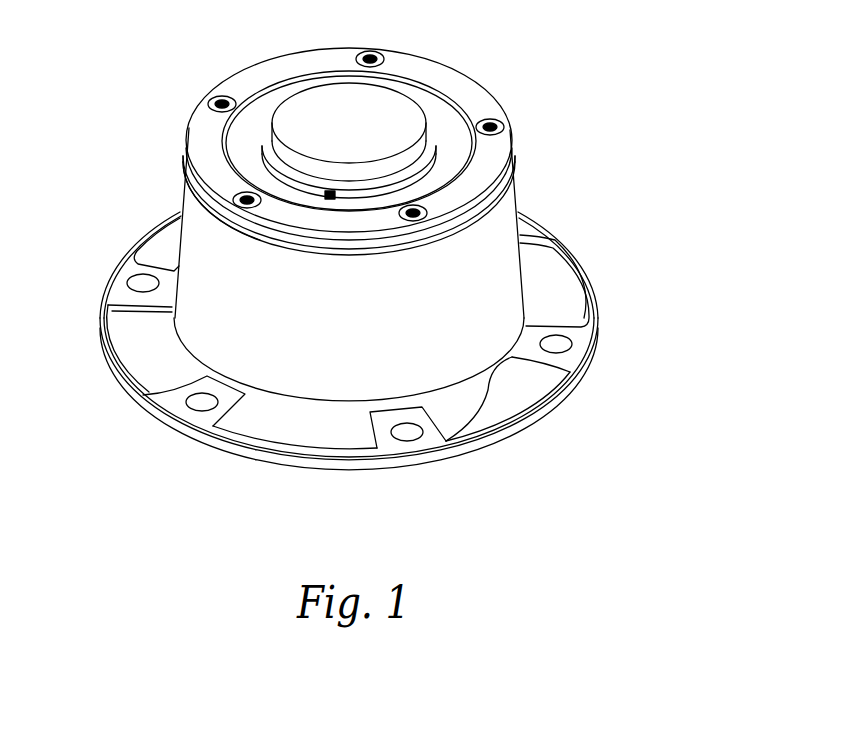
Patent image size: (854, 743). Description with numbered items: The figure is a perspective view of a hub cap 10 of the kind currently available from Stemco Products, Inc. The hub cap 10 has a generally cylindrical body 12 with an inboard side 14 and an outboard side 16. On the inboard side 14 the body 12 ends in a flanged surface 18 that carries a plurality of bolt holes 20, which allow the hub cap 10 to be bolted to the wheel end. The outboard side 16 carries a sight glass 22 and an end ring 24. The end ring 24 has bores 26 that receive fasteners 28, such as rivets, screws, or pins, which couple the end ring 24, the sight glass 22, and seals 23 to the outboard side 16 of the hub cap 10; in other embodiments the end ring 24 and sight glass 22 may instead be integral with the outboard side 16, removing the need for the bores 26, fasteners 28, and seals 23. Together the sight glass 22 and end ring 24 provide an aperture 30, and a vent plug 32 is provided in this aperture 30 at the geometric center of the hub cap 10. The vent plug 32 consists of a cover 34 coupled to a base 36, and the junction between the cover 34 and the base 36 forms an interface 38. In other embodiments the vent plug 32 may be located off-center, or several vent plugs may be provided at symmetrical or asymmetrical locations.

The hub cap 10 is at (397, 239).
The cylindrical body 12 is at (512, 206).
The inboard side 14 is at (391, 299).
The outboard side 16 is at (319, 154).
The flanged surface 18 is at (379, 341).
The bolt holes 20 is at (572, 352).
The sight glass 22 is at (435, 125).
The seals 23 is at (218, 243).
The end ring 24 is at (486, 103).
The bores 26 is at (220, 99).
The fasteners 28 is at (195, 114).
The aperture 30 is at (465, 157).
The vent plug 32 is at (348, 94).
The cover 34 is at (315, 108).
The base 36 is at (267, 163).
The interface 38 is at (377, 190).